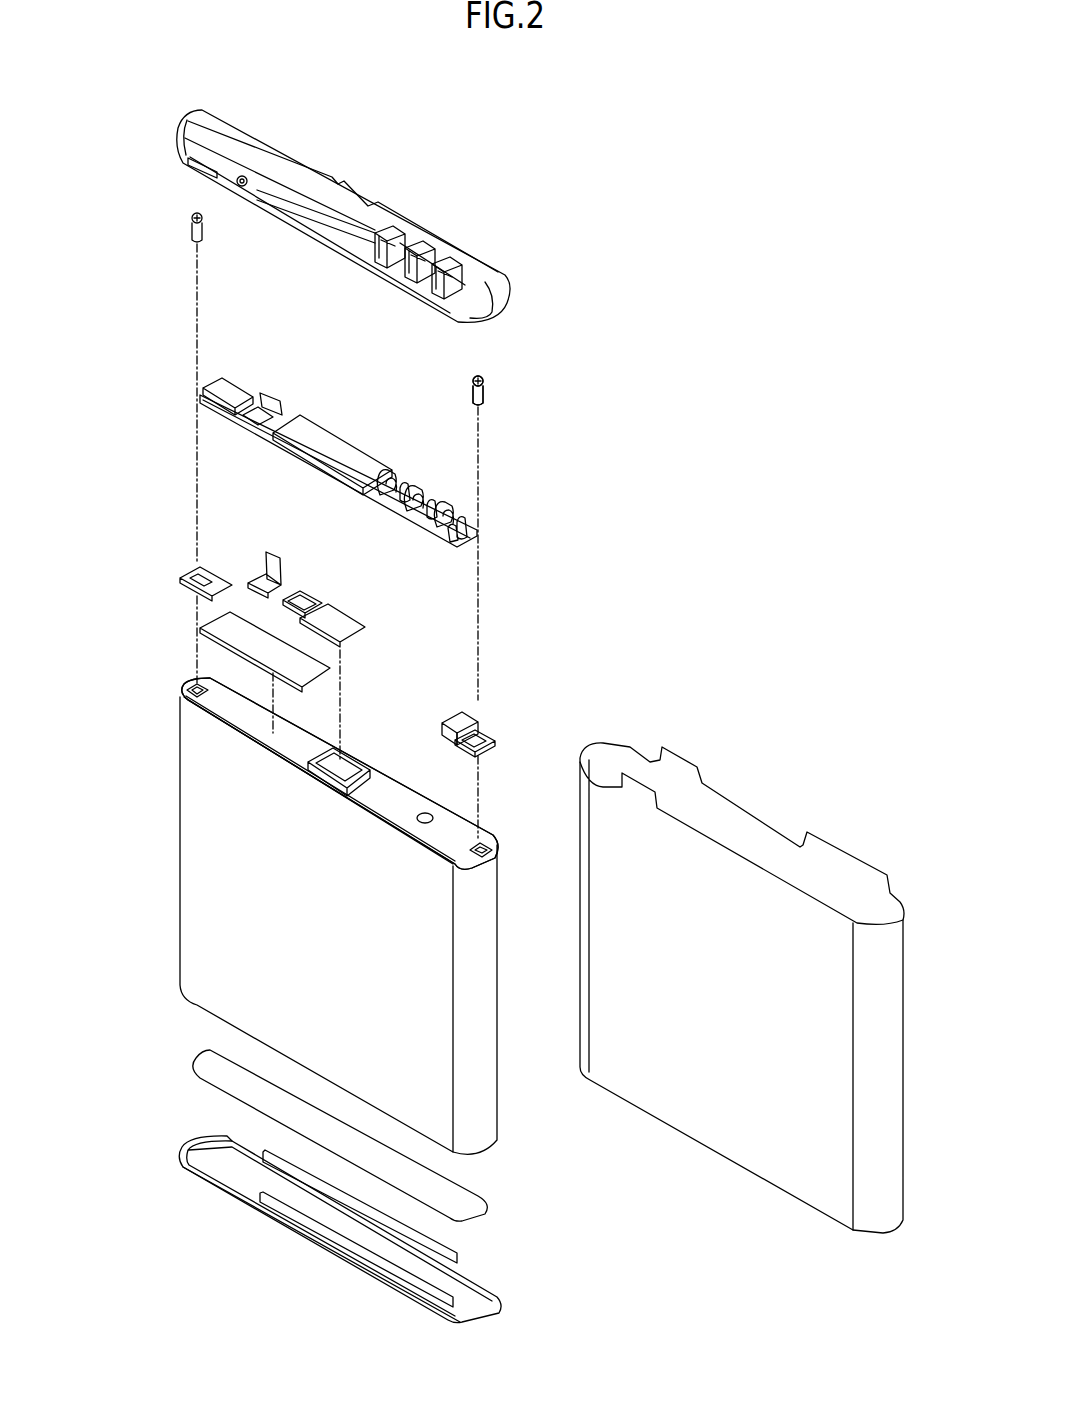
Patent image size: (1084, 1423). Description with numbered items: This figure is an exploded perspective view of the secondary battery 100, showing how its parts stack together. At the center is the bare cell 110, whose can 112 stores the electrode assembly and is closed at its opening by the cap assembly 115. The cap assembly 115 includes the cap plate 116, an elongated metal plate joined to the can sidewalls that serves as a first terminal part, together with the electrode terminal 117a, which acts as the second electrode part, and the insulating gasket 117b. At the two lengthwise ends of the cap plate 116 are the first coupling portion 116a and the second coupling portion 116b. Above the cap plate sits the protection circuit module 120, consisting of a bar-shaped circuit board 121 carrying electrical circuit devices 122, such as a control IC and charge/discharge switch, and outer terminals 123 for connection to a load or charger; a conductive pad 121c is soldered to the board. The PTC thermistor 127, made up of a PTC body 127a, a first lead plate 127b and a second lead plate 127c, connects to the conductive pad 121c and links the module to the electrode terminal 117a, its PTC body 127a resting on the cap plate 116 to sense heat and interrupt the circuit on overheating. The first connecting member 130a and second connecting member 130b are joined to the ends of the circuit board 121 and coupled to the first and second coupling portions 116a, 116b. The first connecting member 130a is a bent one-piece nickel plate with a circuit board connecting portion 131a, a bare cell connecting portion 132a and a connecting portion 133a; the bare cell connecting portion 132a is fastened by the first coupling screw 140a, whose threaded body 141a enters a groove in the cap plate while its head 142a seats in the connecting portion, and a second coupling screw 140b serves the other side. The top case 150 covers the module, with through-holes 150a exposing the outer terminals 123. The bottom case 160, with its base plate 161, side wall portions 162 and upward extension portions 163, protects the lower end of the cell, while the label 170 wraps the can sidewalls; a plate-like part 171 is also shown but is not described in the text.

The secondary battery 100 is at (788, 212).
The bare cell 110 is at (318, 902).
The can 112 is at (196, 789).
The cap assembly 115 is at (207, 709).
The cap plate 116 is at (390, 808).
The first coupling portion 116a is at (480, 842).
The second coupling portion 116b is at (192, 686).
The electrode terminal 117a is at (306, 766).
The insulating gasket 117b is at (328, 790).
The protection circuit module 120 is at (365, 439).
The circuit board 121 is at (480, 523).
The conductive pad 121c is at (271, 397).
The electrical circuit devices 122 is at (225, 388).
The outer terminals 123 is at (448, 503).
The PTC thermistor 127 is at (357, 600).
The PTC body 127a is at (304, 598).
The first lead plate 127b is at (350, 630).
The second lead plate 127c is at (270, 560).
The first connecting member 130a is at (485, 706).
The second connecting member 130b is at (180, 573).
The circuit board connecting portion 131a is at (468, 712).
The bare cell connecting portion 132a is at (497, 743).
The connecting portion 133a is at (482, 726).
The first coupling screw 140a is at (474, 378).
The second coupling screw 140b is at (190, 221).
The body 141a is at (471, 393).
The head 142a is at (471, 380).
The top case 150 is at (294, 143).
The through-holes 150a is at (447, 262).
The bottom case 160 is at (300, 1218).
The base plate 161 is at (200, 1150).
The side wall portions 162 is at (204, 1180).
The extension portions 163 is at (325, 1236).
The label 170 is at (757, 810).
The insulating plate 171 is at (197, 1057).